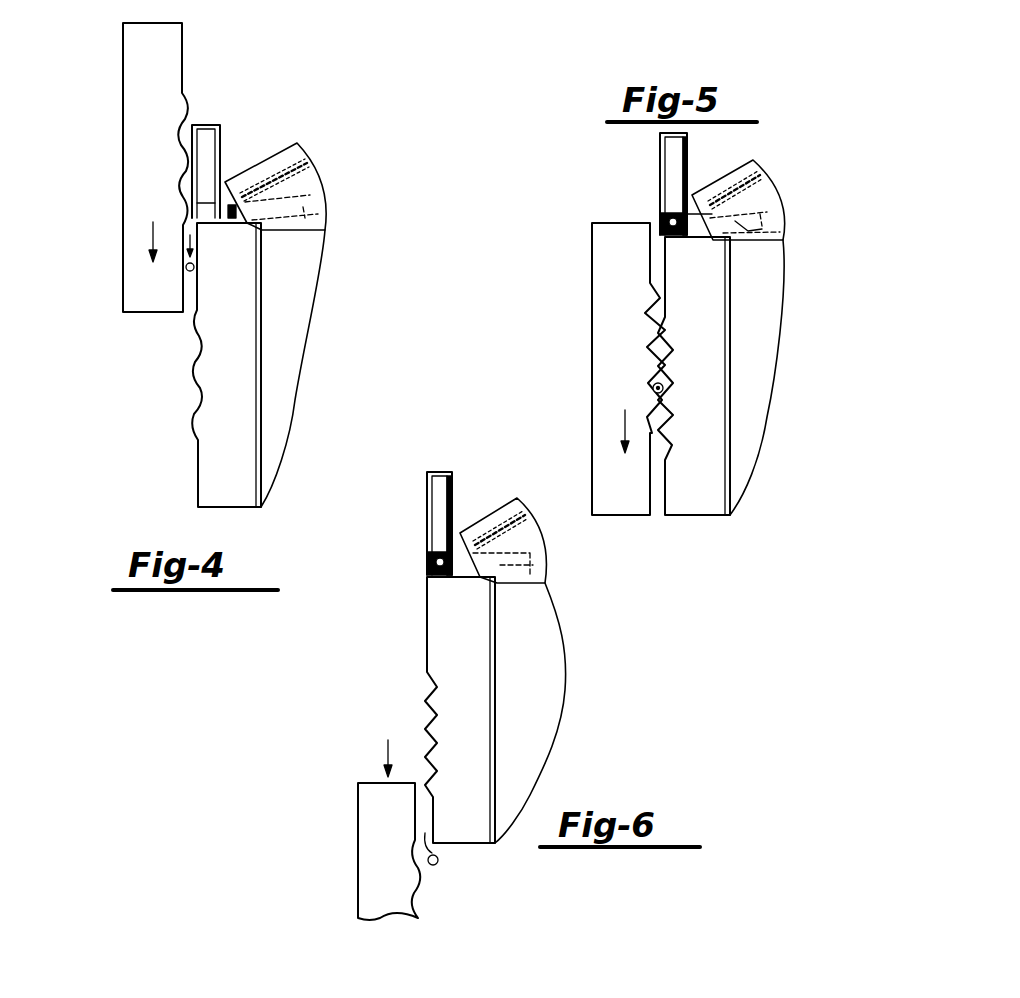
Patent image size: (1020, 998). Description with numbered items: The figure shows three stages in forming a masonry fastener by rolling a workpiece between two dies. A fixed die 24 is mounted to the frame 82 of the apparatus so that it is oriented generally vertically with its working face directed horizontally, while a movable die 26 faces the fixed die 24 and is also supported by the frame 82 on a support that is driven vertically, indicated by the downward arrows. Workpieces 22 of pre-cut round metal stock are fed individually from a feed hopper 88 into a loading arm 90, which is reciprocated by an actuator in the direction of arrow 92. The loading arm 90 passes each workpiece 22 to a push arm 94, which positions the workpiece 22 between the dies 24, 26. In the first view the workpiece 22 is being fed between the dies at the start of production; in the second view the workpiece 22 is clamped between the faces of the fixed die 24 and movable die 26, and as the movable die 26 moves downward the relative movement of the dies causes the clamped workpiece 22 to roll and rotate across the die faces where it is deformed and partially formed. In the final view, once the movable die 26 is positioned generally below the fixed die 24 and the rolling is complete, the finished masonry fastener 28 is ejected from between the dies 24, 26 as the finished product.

In FIG. 4, the workpiece 22 is at (188, 270).
In FIG. 5, the workpiece 22 is at (670, 215).
In FIG. 6, the workpiece 22 is at (440, 558).
In FIG. 4, the fixed die 24 is at (228, 373).
In FIG. 5, the fixed die 24 is at (695, 375).
In FIG. 6, the fixed die 24 is at (478, 655).
In FIG. 4, the movable die 26 is at (133, 125).
In FIG. 5, the movable die 26 is at (622, 338).
In FIG. 6, the movable die 26 is at (373, 822).
In FIG. 6, the masonry fastener 28 is at (440, 866).
In FIG. 4, the frame 82 is at (282, 310).
In FIG. 5, the frame 82 is at (743, 305).
In FIG. 6, the frame 82 is at (513, 728).
In FIG. 4, the feed hopper 88 is at (308, 198).
In FIG. 5, the feed hopper 88 is at (765, 197).
In FIG. 6, the feed hopper 88 is at (510, 545).
In FIG. 4, the loading arm 90 is at (328, 210).
In FIG. 5, the loading arm 90 is at (785, 237).
In FIG. 6, the loading arm 90 is at (543, 570).
In FIG. 5, the arrow 92 is at (742, 226).
In FIG. 4, the push arm 94 is at (218, 157).
In FIG. 5, the push arm 94 is at (660, 155).
In FIG. 6, the push arm 94 is at (453, 498).